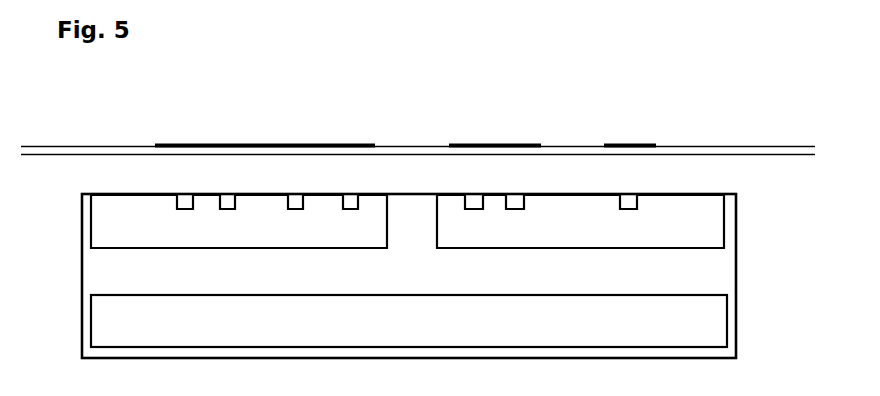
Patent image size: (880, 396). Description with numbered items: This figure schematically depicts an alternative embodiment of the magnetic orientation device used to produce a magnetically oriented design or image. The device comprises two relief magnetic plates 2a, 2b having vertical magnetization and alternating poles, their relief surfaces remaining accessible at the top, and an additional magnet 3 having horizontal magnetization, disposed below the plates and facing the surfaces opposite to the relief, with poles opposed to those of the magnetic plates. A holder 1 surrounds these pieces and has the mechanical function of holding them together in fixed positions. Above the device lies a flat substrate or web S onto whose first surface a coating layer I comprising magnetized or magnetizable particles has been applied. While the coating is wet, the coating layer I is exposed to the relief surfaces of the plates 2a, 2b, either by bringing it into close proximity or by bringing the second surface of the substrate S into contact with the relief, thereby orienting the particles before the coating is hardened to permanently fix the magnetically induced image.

The holder 1 is at (80, 286).
The relief magnetic plate 2a is at (239, 221).
The relief magnetic plate 2b is at (580, 221).
The additional magnet 3 is at (409, 321).
The coating layer I is at (233, 142).
The substrate S is at (729, 151).